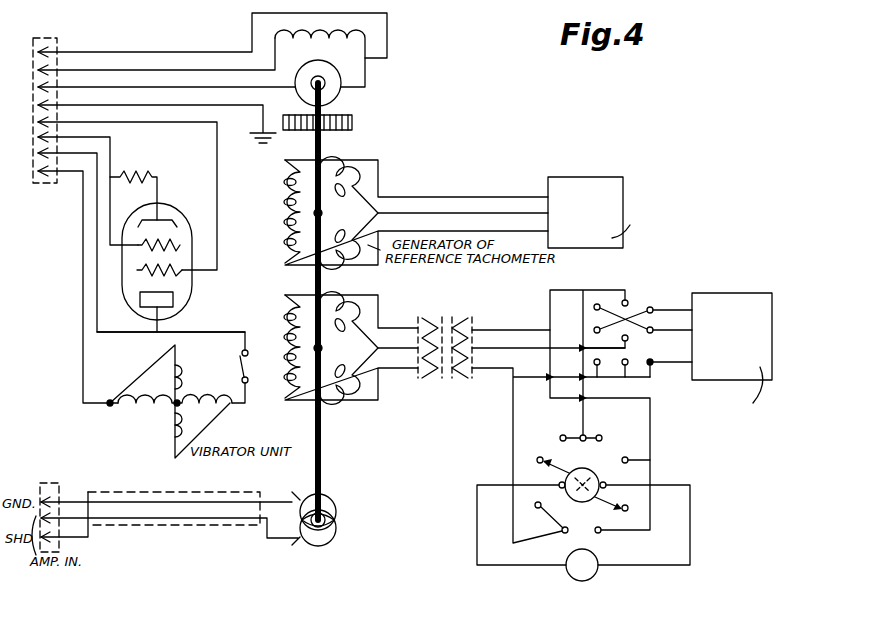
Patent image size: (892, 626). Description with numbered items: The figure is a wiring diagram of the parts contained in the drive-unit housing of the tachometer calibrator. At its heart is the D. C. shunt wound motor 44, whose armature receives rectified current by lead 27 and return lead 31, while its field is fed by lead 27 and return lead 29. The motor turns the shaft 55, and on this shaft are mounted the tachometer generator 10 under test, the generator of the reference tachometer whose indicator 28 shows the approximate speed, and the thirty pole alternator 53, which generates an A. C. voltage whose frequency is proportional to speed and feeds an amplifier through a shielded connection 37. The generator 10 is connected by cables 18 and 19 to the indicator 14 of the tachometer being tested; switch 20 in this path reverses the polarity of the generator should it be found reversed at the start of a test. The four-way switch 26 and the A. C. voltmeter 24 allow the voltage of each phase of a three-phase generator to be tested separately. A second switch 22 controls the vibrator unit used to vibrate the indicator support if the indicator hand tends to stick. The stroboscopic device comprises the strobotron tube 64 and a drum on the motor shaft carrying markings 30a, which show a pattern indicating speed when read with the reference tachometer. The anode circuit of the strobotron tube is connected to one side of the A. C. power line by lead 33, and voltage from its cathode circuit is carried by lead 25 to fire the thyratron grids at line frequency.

The tachometer generator 10 is at (365, 383).
The indicator 14 is at (725, 293).
The cable 18 is at (495, 368).
The cable 19 is at (493, 330).
The switch 20 is at (640, 305).
The second switch 22 is at (241, 368).
The A. C. voltmeter 24 is at (598, 578).
The lead 25 is at (113, 145).
The four-way switch 26 is at (600, 472).
The lead 27 is at (80, 52).
The indicator of reference tachometer 28 is at (575, 177).
The return lead 29 is at (153, 70).
The markings 30a is at (353, 127).
The return lead 31 is at (210, 87).
The lead 33 is at (137, 333).
The shielded cable 37 is at (112, 500).
The motor 44 is at (345, 77).
The alternator 53 is at (338, 520).
The shaft 55 is at (322, 448).
The strobotron tube 64 is at (188, 307).